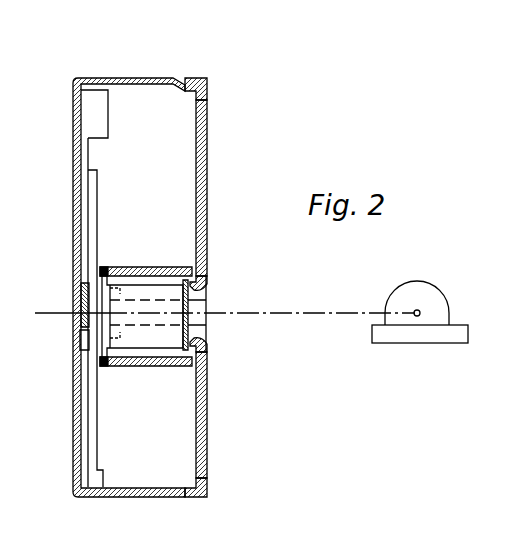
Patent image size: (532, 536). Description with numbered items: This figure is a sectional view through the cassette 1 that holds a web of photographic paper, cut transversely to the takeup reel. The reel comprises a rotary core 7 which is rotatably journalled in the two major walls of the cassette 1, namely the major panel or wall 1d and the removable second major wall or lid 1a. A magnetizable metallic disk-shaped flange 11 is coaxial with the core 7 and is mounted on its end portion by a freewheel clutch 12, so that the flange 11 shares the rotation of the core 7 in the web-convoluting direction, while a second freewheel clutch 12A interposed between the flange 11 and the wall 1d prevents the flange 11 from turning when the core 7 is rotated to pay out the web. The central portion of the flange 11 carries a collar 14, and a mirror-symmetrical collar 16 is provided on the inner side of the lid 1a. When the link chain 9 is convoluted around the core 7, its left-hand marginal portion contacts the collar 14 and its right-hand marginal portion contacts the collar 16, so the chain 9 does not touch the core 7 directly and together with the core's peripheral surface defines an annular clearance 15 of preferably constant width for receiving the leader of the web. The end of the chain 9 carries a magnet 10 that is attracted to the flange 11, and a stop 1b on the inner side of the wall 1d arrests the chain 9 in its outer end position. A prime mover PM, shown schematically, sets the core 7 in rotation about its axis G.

The cassette 1 is at (140, 74).
The removable second major wall or lid 1a is at (208, 138).
The stop 1b is at (107, 117).
The major panel or wall 1d is at (73, 430).
The magnetizable metallic disk-shaped flange 11 is at (93, 169).
The magnet 10 is at (104, 266).
The link chain 9 is at (141, 366).
The annular clearance 15 is at (157, 277).
The collar 16 is at (200, 283).
The rotary core 7 is at (182, 332).
The collar 14 is at (98, 288).
The freewheel clutch 12 is at (110, 333).
The second freewheel clutch 12A is at (81, 352).
The optical axis G is at (44, 313).
The prime mover PM is at (470, 304).